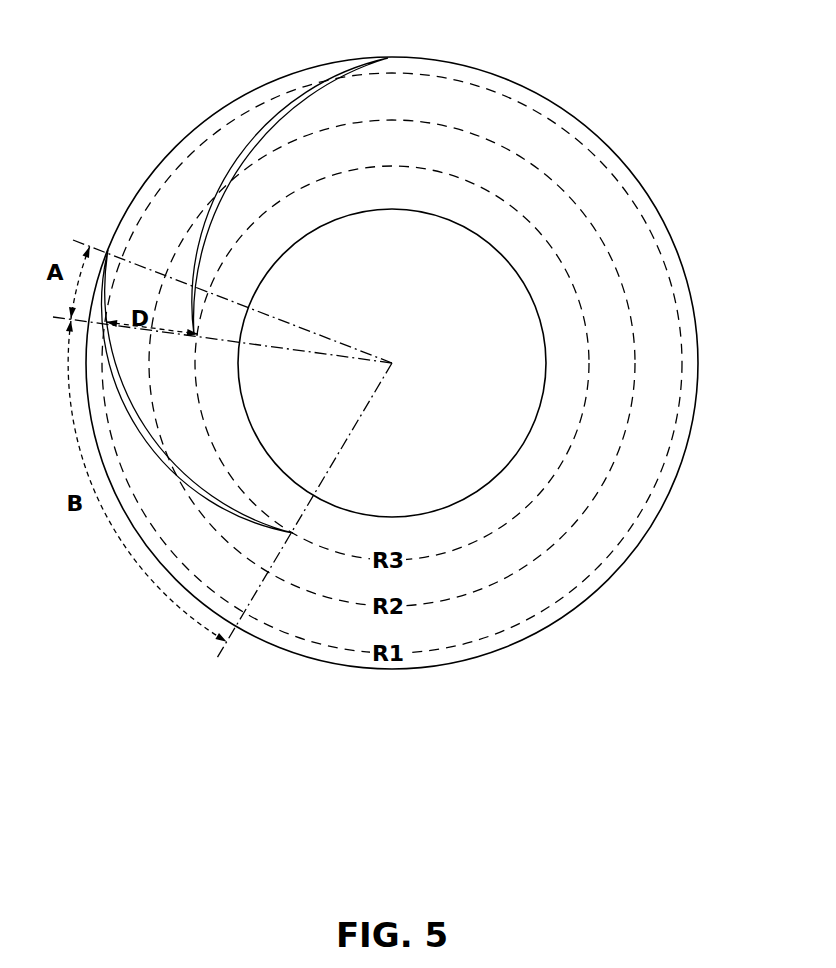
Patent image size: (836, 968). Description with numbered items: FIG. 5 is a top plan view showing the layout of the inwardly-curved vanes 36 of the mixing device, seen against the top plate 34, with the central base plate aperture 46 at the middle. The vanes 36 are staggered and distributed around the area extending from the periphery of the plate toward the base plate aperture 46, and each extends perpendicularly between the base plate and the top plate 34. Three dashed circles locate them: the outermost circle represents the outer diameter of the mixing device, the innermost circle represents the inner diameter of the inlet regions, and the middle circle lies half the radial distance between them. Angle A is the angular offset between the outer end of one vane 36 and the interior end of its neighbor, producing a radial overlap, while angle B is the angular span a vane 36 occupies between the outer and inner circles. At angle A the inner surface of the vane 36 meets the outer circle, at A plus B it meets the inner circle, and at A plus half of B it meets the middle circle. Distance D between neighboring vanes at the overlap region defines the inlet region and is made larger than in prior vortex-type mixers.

The top plate 34 is at (650, 528).
The inwardly-curved vane 36 is at (310, 85).
The base plate aperture 46 is at (543, 382).